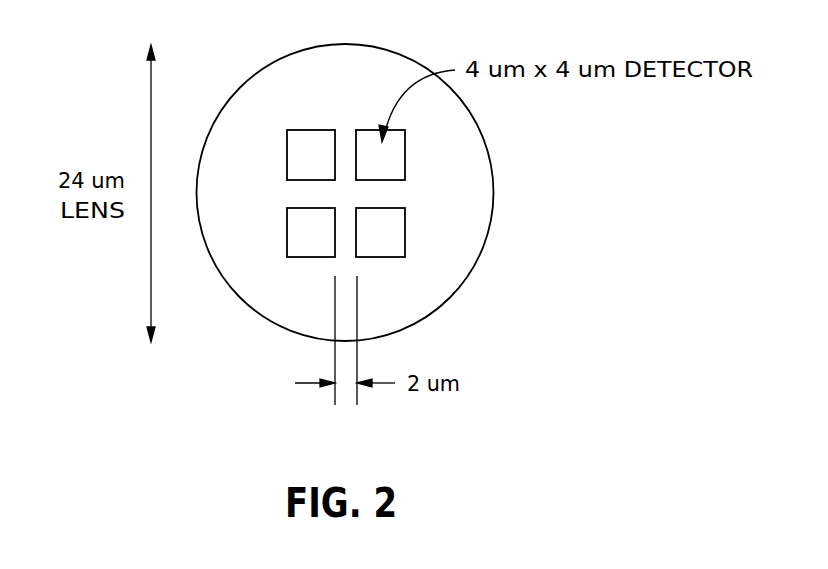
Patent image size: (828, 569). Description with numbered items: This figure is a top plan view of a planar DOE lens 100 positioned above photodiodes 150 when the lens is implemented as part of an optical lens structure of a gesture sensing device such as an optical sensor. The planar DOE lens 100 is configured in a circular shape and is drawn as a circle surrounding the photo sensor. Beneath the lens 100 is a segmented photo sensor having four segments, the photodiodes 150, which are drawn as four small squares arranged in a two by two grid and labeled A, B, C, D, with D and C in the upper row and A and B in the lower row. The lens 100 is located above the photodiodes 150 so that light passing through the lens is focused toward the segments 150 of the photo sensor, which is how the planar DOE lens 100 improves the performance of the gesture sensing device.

The planar DOE lens 100 is at (472, 190).
The photodiodes 150 is at (346, 194).
The detector A is at (311, 232).
The detector B is at (380, 232).
The detector C is at (380, 155).
The detector D is at (311, 155).